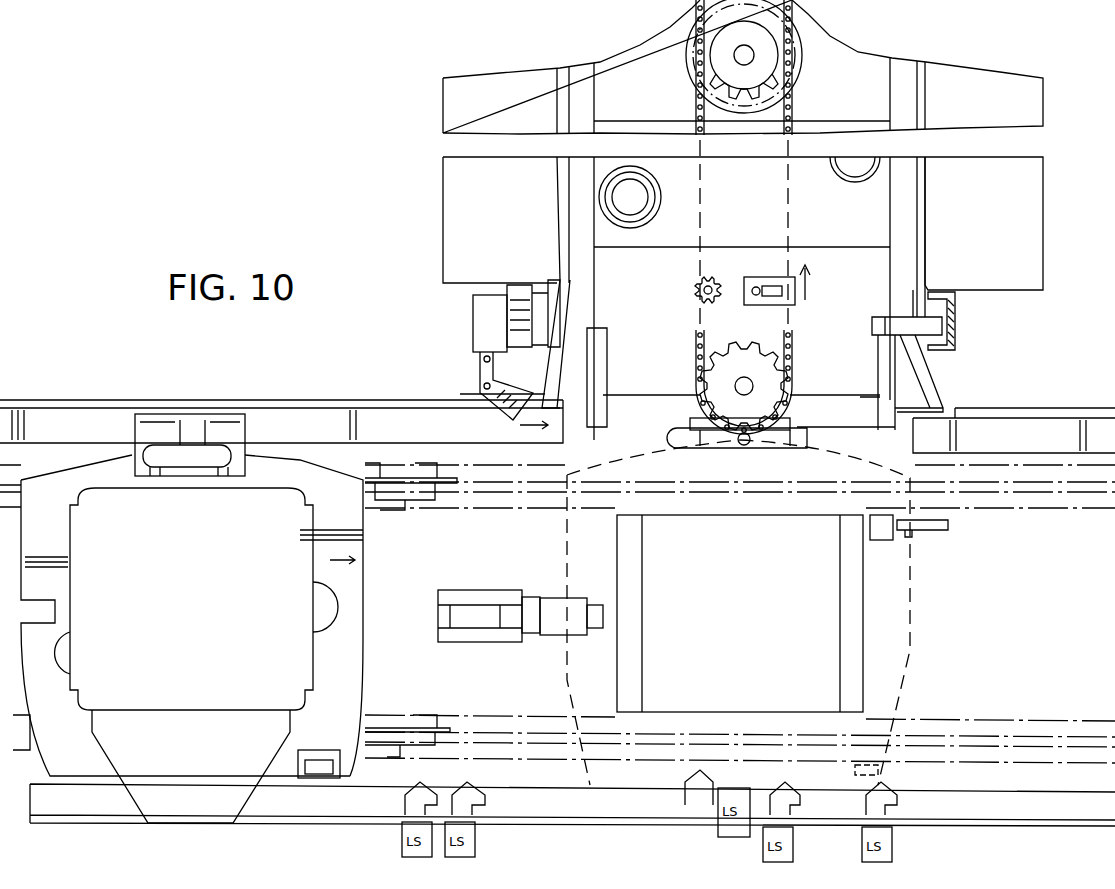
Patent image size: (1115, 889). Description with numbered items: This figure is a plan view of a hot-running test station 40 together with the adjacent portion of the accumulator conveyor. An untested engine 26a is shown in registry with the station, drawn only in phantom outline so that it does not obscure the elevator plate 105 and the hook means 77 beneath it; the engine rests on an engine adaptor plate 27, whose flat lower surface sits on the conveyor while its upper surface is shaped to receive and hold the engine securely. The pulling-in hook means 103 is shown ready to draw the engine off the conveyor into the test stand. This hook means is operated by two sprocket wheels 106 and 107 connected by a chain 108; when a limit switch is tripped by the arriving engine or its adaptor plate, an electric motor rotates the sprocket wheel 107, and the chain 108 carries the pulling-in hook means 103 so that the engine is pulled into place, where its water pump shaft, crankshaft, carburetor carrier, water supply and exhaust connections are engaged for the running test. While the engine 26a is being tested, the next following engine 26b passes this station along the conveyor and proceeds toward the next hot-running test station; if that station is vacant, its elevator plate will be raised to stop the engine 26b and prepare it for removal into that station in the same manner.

The test station 40 is at (779, 226).
The sprocket wheel 107 is at (740, 40).
The chain 108 is at (795, 106).
The sprocket wheel 106 is at (698, 366).
The pulling-in hook means 103 is at (808, 444).
The engine 26b is at (340, 565).
The engine adaptor plate 27 is at (355, 677).
The hook means 77 is at (512, 620).
The engine 26a is at (912, 560).
The elevator plate 105 is at (863, 578).